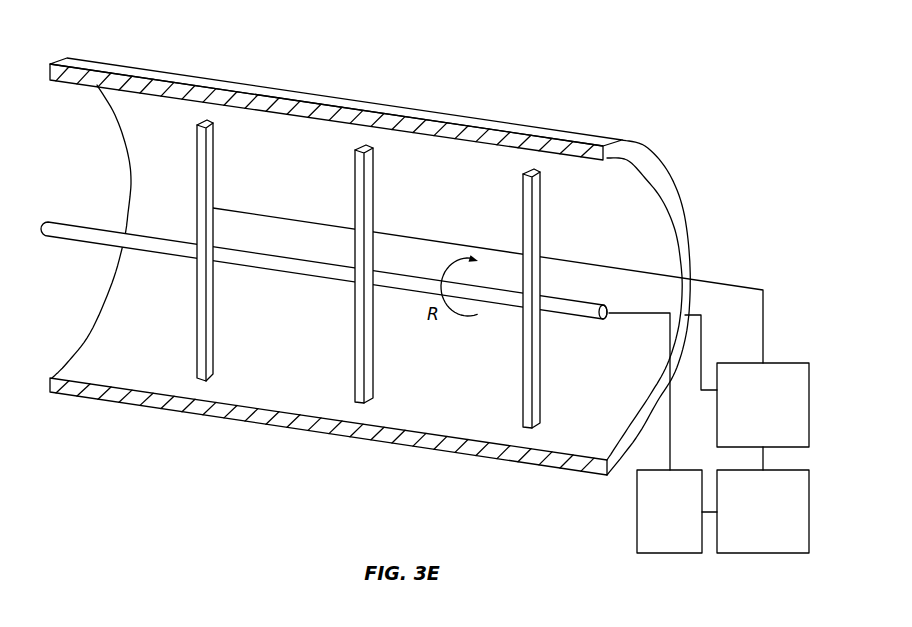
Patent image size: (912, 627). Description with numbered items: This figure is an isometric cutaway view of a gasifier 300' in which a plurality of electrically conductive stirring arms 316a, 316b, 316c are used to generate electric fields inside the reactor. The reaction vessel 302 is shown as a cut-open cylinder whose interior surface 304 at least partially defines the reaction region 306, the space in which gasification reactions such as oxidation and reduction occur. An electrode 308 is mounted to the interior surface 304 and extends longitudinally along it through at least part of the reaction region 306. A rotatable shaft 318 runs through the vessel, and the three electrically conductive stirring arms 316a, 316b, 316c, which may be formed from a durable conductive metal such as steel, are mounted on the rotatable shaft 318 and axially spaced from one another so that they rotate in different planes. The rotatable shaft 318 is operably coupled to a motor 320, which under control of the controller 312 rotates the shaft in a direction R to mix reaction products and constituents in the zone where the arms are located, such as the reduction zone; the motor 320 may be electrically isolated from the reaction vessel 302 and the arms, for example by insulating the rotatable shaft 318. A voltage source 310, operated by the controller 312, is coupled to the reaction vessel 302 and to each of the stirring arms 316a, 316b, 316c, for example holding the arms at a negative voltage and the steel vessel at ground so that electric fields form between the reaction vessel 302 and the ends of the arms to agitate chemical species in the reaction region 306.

The gasifier 300' is at (389, 246).
The reaction vessel 302 is at (472, 120).
The interior surface 304 is at (637, 202).
The reaction region 306 is at (641, 238).
The electrode 308 is at (320, 213).
The voltage source 310 is at (763, 416).
The controller 312 is at (755, 511).
The electrically conductive stirring arm 316a is at (197, 330).
The electrically conductive stirring arm 316b is at (356, 352).
The electrically conductive stirring arm 316c is at (523, 385).
The rotatable shaft 318 is at (88, 237).
The motor 320 is at (669, 511).